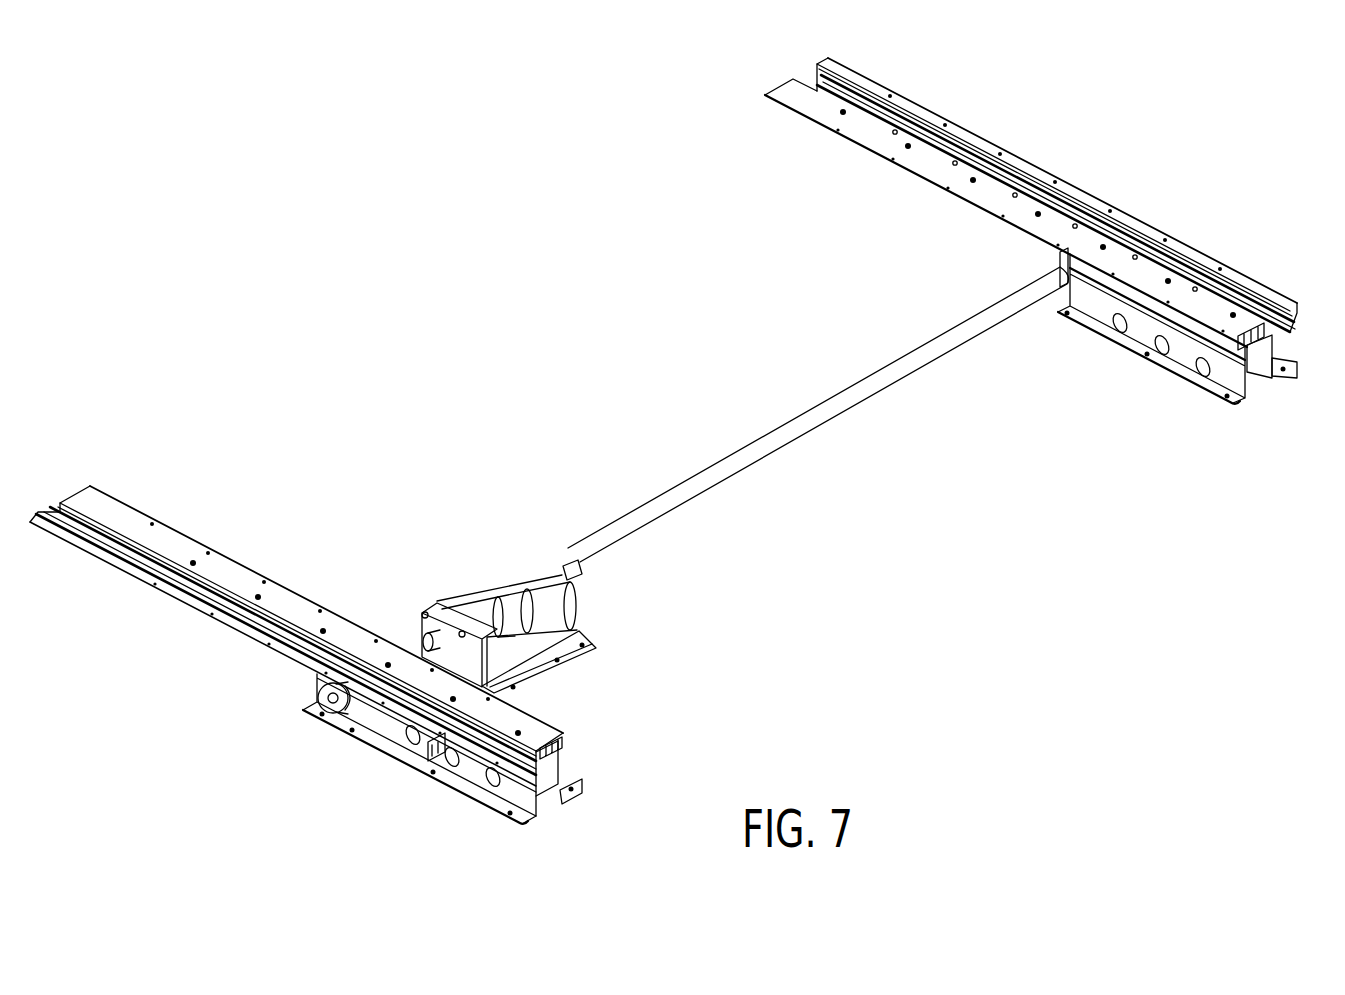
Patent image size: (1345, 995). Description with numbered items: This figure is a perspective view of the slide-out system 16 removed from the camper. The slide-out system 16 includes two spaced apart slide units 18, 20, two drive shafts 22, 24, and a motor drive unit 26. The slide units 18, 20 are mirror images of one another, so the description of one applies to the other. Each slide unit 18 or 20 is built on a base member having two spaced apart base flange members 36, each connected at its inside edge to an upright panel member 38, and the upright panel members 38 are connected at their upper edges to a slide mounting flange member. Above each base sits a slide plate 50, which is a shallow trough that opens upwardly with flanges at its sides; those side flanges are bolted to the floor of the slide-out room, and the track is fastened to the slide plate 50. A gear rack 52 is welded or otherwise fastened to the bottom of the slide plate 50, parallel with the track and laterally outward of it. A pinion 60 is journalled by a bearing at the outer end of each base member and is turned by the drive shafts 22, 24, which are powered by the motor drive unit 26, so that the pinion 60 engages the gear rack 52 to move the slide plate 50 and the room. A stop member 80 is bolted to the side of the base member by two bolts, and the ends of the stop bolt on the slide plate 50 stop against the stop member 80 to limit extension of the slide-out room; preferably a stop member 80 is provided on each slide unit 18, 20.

The slide-out system 16 is at (538, 820).
The slide unit 18 is at (1197, 246).
The slide unit 20 is at (400, 777).
The drive shaft 22 is at (778, 440).
The drive shaft 24 is at (410, 645).
The motor drive unit 26 is at (576, 600).
The base flange member 36 is at (1178, 374).
The upright panel member 38 is at (1267, 372).
The slide plate 50 is at (940, 171).
The gear rack 52 is at (1250, 347).
The pinion 60 is at (318, 692).
The stop member 80 is at (438, 752).